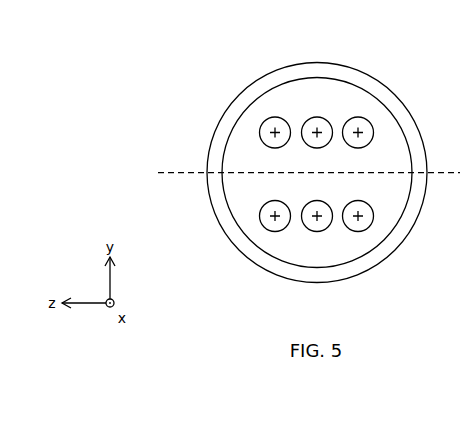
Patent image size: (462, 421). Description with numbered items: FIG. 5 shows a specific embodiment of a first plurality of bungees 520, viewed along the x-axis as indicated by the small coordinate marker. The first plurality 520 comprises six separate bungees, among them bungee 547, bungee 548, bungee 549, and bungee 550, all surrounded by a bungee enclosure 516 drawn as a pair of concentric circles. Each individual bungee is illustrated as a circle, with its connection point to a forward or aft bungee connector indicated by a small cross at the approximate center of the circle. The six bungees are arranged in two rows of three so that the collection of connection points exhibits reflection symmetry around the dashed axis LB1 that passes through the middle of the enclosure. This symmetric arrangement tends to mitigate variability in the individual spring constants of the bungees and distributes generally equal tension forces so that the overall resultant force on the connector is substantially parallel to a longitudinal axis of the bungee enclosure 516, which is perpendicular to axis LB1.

The bungee enclosure 516 is at (224, 213).
The first plurality of bungees 520 is at (251, 154).
The bungee 547 is at (273, 229).
The bungee 548 is at (273, 117).
The bungee 549 is at (317, 117).
The bungee 550 is at (360, 117).
The axis L_B1 LB1 is at (200, 162).